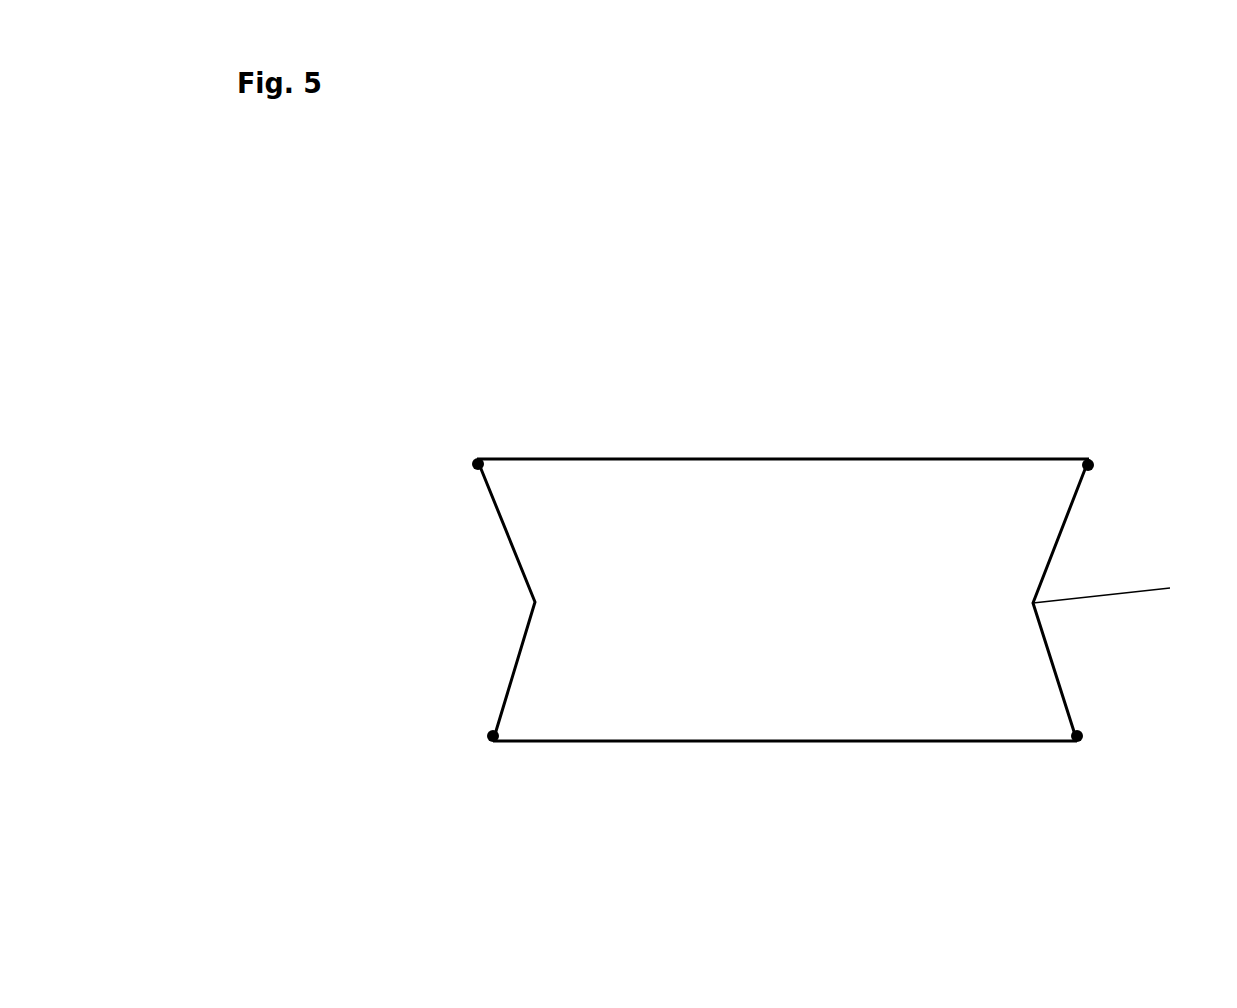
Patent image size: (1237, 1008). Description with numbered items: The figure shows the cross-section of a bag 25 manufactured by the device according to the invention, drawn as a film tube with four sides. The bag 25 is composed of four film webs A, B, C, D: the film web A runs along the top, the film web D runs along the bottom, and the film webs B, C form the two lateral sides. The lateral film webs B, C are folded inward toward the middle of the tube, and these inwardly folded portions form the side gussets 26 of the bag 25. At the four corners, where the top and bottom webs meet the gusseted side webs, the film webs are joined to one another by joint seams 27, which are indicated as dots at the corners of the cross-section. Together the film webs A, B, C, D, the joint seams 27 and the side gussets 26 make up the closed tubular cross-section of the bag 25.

The bag 25 is at (784, 557).
The side gussets 26 is at (1118, 583).
The joint seams 27 is at (472, 462).
The film web A is at (757, 459).
The film web B is at (1058, 640).
The film web C is at (510, 652).
The film web D is at (748, 741).